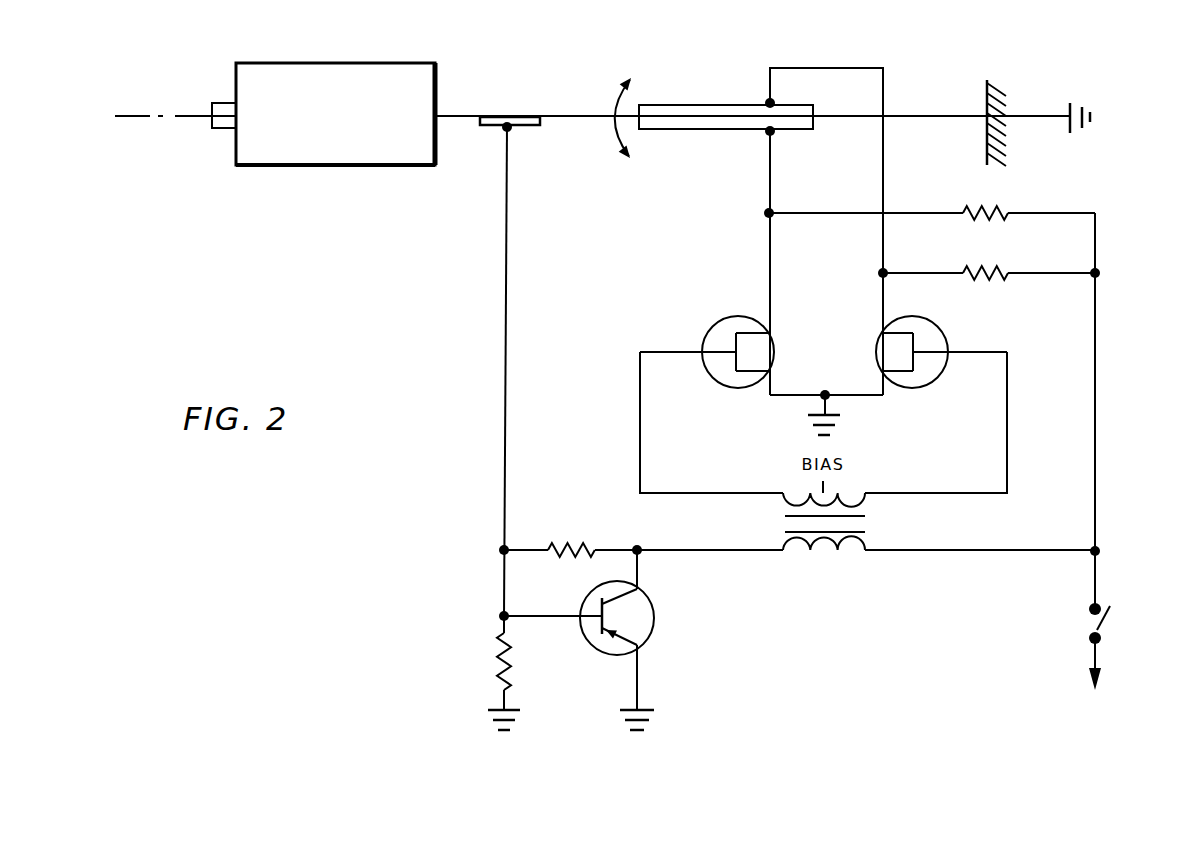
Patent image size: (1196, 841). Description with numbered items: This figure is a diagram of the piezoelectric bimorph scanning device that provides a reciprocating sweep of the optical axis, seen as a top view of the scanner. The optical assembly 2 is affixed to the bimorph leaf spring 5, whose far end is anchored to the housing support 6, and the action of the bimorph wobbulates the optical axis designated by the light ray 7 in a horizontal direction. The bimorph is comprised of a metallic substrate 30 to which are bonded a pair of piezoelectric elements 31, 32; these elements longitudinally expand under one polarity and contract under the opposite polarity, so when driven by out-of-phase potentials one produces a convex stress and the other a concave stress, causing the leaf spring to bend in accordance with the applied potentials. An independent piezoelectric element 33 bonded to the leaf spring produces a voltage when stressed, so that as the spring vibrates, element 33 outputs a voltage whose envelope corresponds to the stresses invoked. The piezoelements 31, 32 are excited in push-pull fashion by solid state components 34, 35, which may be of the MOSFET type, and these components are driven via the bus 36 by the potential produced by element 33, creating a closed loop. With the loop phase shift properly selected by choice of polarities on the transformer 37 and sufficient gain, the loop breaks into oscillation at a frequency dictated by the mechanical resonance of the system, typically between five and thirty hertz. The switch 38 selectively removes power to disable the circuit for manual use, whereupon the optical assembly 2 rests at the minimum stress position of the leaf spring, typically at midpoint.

The optical assembly 2 is at (358, 63).
The bimorph leaf spring 5 is at (920, 116).
The housing support 6 is at (988, 80).
The light ray 7 is at (143, 113).
The metallic substrate 30 is at (677, 114).
The piezoelectric element 31 is at (694, 105).
The piezoelectric element 32 is at (727, 130).
The independent piezoelectric element 33 is at (531, 127).
The solid state component 34 is at (713, 378).
The solid state component 35 is at (933, 380).
The bus 36 is at (506, 458).
The transformer 37 is at (870, 532).
The switch 38 is at (1115, 630).